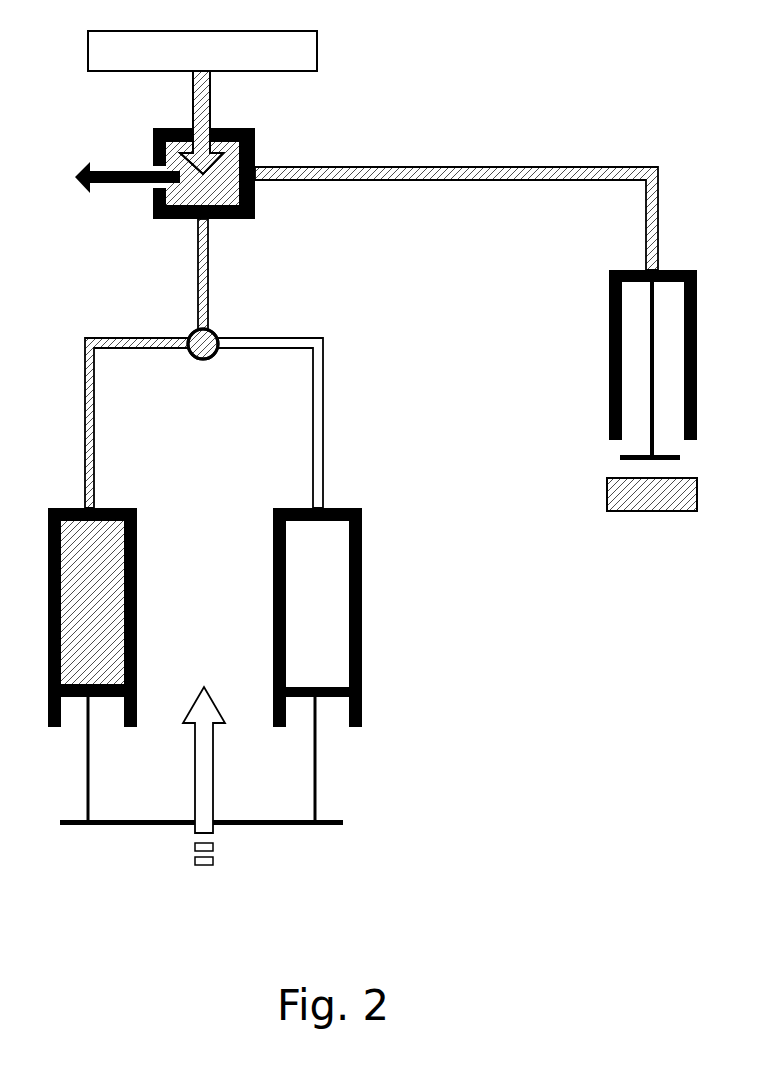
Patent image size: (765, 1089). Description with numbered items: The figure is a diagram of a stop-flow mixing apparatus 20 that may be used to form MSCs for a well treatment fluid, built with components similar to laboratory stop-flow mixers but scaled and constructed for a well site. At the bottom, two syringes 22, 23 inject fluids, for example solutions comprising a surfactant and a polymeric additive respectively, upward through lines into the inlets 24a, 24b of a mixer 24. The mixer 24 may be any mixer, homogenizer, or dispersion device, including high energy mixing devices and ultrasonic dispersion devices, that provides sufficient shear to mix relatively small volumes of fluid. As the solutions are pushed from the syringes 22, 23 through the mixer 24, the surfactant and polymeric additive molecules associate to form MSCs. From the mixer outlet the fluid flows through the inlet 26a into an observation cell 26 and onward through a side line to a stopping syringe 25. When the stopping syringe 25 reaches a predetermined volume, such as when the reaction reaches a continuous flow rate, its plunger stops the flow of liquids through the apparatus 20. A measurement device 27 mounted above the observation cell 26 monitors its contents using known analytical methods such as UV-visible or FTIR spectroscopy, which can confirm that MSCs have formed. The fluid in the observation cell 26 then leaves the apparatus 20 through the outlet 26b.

The stop-flow mixing apparatus 20 is at (555, 53).
The syringe 22 is at (73, 665).
The syringe 23 is at (333, 665).
The mixer 24 is at (185, 417).
The inlet 24a is at (189, 350).
The inlet 24b is at (222, 350).
The stopping syringe 25 is at (669, 390).
The observation cell 26 is at (405, 170).
The inlet 26a is at (198, 227).
The outlet 26b is at (152, 197).
The measurement device 27 is at (219, 51).